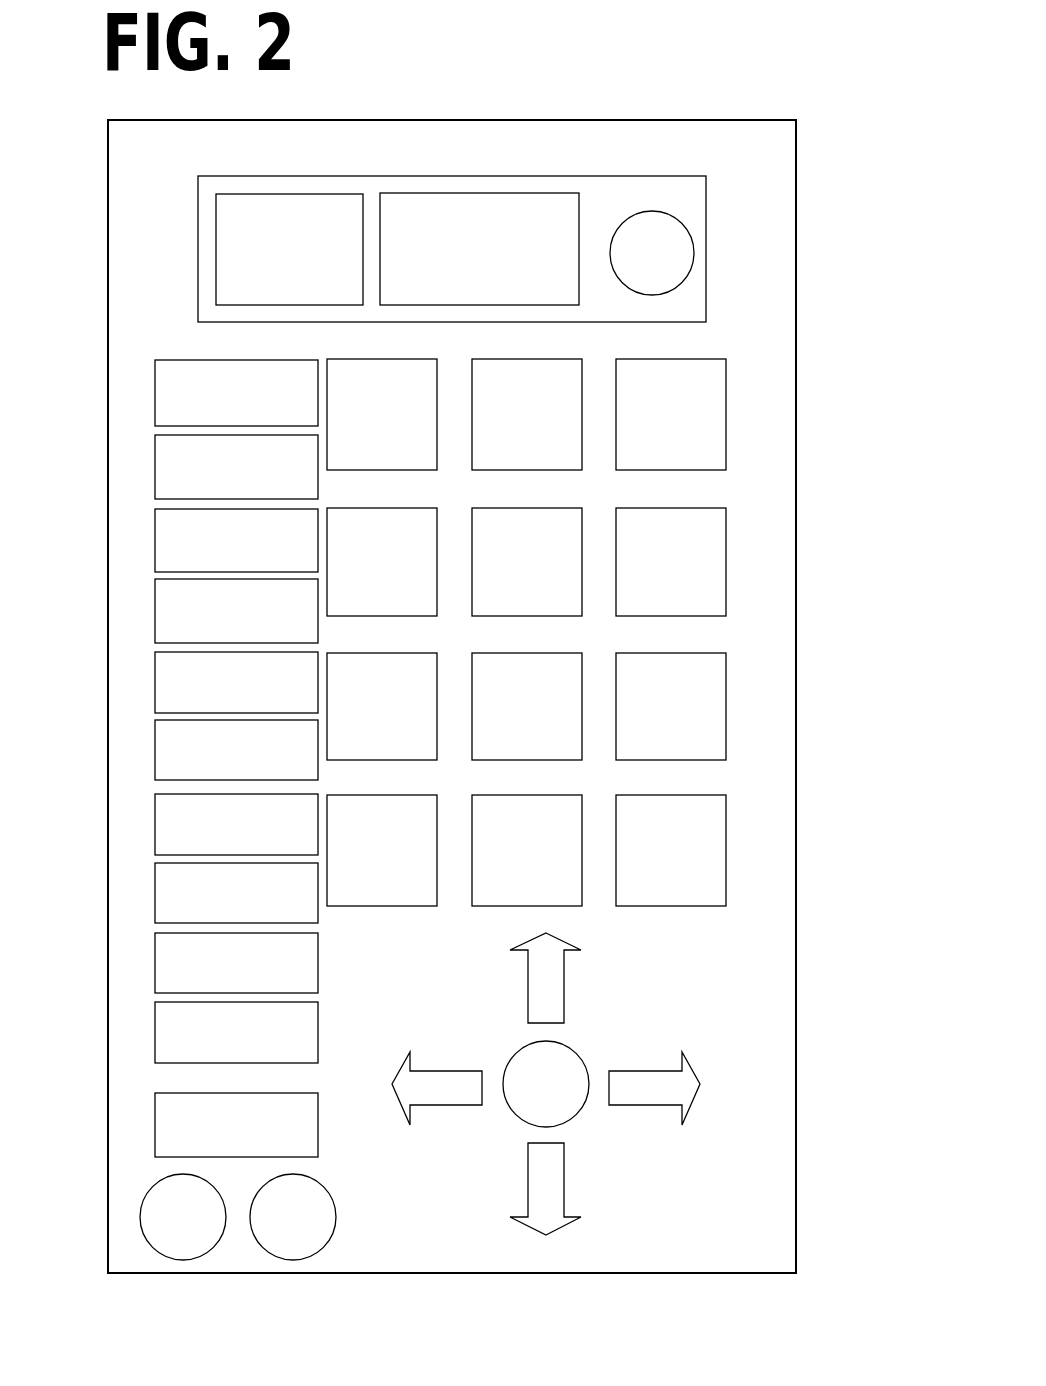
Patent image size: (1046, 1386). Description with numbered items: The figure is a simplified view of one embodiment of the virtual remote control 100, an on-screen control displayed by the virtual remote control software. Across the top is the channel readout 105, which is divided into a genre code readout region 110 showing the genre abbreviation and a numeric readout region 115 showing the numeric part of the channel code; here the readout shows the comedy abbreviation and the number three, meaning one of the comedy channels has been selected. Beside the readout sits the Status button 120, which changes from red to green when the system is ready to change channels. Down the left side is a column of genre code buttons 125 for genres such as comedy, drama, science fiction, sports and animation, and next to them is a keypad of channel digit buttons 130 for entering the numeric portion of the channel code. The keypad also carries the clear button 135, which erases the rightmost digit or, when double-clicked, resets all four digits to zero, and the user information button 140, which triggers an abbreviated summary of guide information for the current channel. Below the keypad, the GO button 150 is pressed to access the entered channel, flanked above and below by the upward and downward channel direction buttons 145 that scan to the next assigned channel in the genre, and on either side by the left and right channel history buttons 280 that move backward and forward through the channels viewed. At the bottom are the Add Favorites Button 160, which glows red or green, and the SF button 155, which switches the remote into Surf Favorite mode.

The virtual remote control 100 is at (708, 93).
The channel readout 105 is at (198, 214).
The genre code readout region 110 is at (216, 250).
The numeric readout region 115 is at (505, 193).
The Status button 120 is at (612, 213).
The genre code buttons 125 is at (155, 380).
The channel digit buttons 130 is at (727, 397).
The clear button 135 is at (727, 849).
The user information button 140 is at (382, 906).
The channel direction buttons 145 is at (564, 996).
The GO button 150 is at (573, 1047).
The SF button 155 is at (330, 1198).
The Add Favorites Button 160 is at (141, 1205).
The channel history buttons 280 is at (418, 1068).